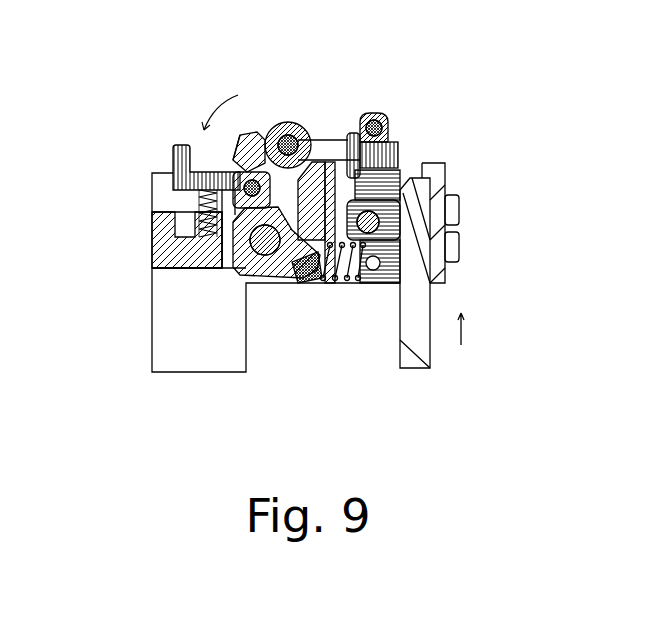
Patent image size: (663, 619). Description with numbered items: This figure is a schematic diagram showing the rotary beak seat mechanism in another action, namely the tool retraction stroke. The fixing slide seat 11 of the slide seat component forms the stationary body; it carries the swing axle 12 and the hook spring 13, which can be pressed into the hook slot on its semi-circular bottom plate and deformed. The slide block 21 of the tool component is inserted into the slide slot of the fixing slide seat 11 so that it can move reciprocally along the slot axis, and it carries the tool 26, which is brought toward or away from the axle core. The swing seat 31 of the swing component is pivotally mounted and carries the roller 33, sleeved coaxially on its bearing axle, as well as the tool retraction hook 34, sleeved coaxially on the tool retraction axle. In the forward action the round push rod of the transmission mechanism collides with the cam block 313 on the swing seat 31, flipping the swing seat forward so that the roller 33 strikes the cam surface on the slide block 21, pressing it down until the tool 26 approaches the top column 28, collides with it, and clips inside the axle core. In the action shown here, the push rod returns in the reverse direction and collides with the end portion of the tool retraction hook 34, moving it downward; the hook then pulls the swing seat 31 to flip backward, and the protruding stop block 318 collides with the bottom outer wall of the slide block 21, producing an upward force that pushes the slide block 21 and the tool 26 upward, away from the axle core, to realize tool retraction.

The fixing slide seat 11 is at (162, 270).
The swing axle 12 is at (258, 262).
The hook spring 13 is at (200, 210).
The slide block 21 is at (327, 160).
The tool 26 is at (420, 370).
The top column 28 is at (364, 118).
The swing seat 31 is at (248, 128).
The roller 33 is at (287, 122).
The tool retraction hook 34 is at (178, 162).
The cam block 313 is at (232, 162).
The protruding stop block 318 is at (300, 268).